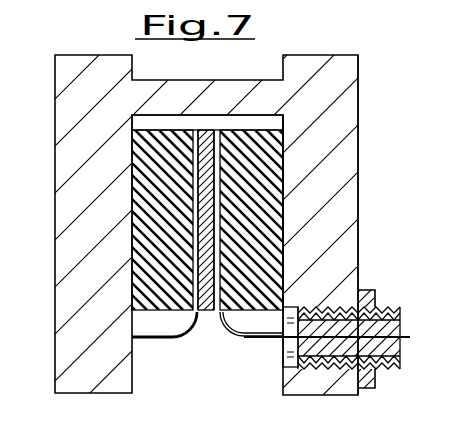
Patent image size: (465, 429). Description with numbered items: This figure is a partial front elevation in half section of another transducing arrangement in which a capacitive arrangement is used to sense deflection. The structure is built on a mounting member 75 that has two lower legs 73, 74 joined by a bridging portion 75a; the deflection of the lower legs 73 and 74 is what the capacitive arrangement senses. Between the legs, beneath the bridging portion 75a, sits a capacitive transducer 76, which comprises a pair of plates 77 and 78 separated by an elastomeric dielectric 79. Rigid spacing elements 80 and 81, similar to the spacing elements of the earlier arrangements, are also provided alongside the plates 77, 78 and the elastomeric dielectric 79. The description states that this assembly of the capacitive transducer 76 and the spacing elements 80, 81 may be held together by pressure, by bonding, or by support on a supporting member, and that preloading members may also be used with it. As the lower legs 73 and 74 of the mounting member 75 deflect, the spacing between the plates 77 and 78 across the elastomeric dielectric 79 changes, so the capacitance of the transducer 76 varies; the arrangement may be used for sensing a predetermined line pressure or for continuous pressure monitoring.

The lower leg 73 is at (68, 184).
The lower leg 74 is at (352, 158).
The mounting member 75 is at (373, 77).
The bridging portion 75a is at (238, 96).
The capacitive transducer 76 is at (206, 122).
The plate 77 is at (186, 291).
The plate 78 is at (226, 291).
The elastomeric dielectric 79 is at (208, 292).
The rigid spacing element 80 is at (136, 266).
The rigid spacing element 81 is at (270, 250).